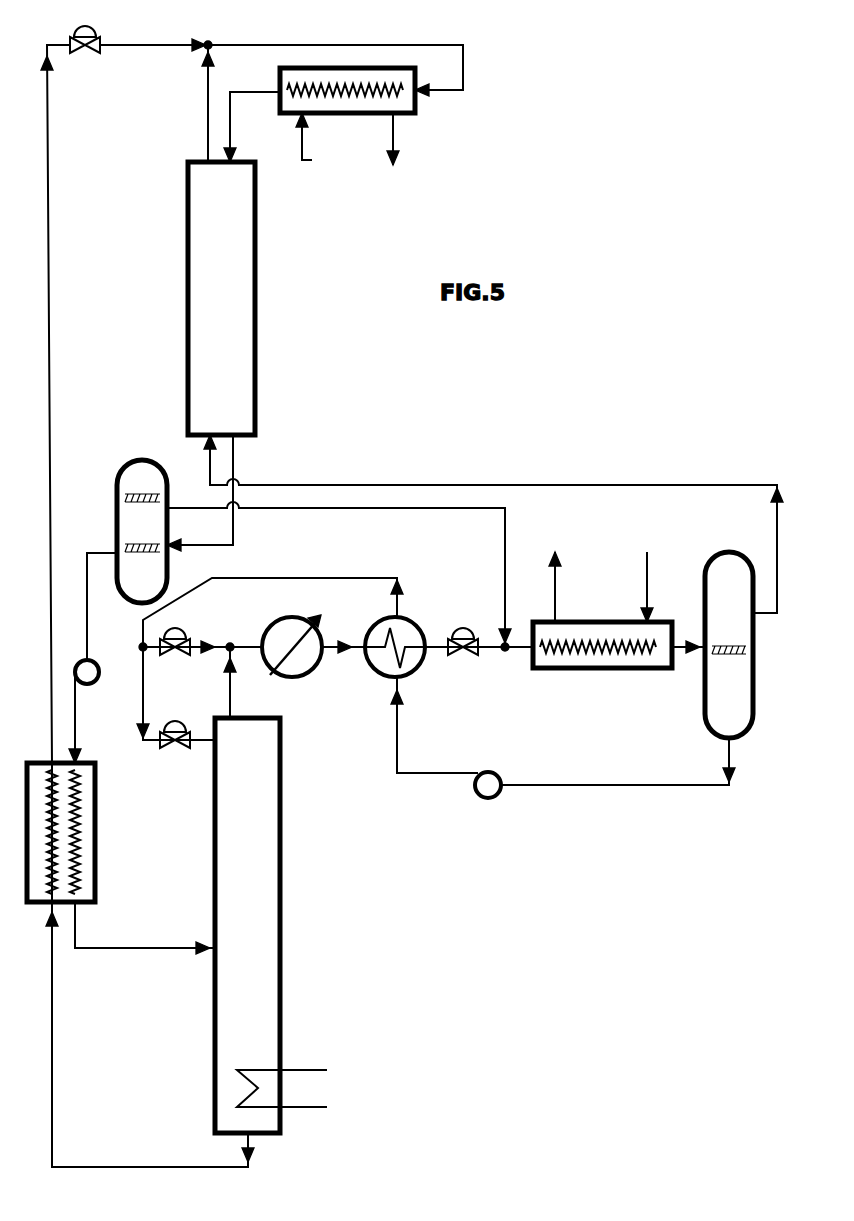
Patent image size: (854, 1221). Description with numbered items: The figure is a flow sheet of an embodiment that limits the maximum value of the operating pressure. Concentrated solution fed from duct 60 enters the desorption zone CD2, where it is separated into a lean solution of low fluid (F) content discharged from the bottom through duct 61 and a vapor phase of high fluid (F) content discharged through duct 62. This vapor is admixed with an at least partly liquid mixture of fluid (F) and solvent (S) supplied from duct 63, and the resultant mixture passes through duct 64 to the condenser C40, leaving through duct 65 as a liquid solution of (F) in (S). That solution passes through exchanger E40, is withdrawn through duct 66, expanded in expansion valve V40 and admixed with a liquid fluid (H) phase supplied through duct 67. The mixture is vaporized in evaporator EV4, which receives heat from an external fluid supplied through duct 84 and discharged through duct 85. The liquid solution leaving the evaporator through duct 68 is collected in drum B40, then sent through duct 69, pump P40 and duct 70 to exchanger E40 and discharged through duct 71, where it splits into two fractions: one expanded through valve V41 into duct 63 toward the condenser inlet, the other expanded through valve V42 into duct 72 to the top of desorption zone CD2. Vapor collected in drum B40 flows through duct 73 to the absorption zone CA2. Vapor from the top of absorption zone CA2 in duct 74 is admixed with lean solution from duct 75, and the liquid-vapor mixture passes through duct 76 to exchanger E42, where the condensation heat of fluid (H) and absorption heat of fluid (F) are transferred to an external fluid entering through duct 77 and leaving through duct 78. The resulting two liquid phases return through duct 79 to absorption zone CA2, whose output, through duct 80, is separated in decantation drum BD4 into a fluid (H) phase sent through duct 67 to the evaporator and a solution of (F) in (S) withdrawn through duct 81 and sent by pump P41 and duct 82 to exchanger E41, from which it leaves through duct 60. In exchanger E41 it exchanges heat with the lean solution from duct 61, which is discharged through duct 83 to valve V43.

The absorption zone CA2 is at (188, 268).
The desorption zone CD2 is at (280, 890).
The decantation drum BD4 is at (123, 466).
The separation drum B40 is at (707, 582).
The exchanger E42 is at (350, 113).
The evaporator EV4 is at (605, 668).
The exchanger E41 is at (95, 848).
The condenser C40 is at (308, 680).
The exchanger E40 is at (380, 680).
The pump P41 is at (96, 662).
The pump P40 is at (488, 798).
The valve V43 is at (86, 53).
The valve V41 is at (174, 655).
The valve V42 is at (177, 728).
The expansion valve V40 is at (464, 627).
The duct 60 is at (128, 950).
The duct 61 is at (130, 1165).
The duct 62 is at (232, 700).
The duct 63 is at (212, 644).
The duct 64 is at (247, 645).
The duct 65 is at (342, 660).
The duct 66 is at (437, 660).
The duct 67 is at (505, 545).
The duct 68 is at (690, 660).
The duct 69 is at (605, 787).
The duct 70 is at (393, 773).
The duct 71 is at (297, 578).
The duct 72 is at (197, 745).
The duct 73 is at (724, 482).
The duct 74 is at (206, 125).
The duct 75 is at (148, 47).
The duct 76 is at (463, 58).
The duct 77 is at (318, 144).
The duct 78 is at (386, 156).
The duct 79 is at (232, 128).
The duct 80 is at (235, 545).
The duct 81 is at (100, 553).
The duct 82 is at (77, 707).
The duct 83 is at (50, 315).
The duct 84 is at (647, 556).
The duct 85 is at (562, 568).